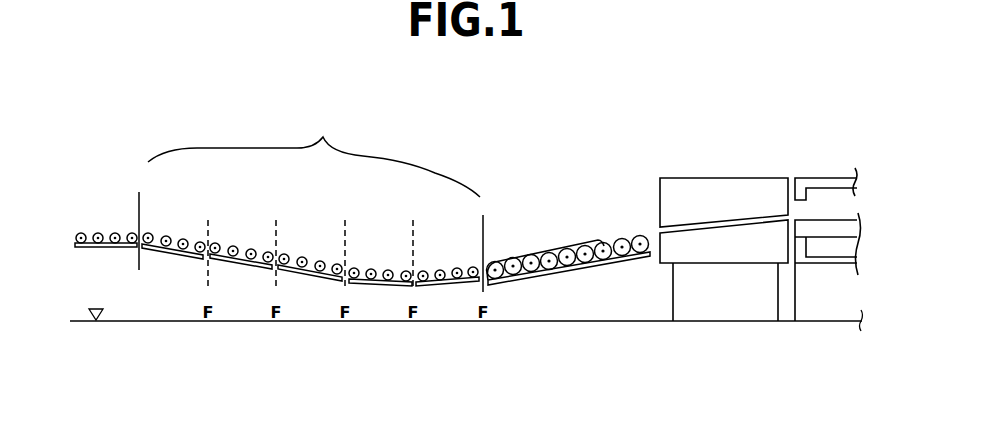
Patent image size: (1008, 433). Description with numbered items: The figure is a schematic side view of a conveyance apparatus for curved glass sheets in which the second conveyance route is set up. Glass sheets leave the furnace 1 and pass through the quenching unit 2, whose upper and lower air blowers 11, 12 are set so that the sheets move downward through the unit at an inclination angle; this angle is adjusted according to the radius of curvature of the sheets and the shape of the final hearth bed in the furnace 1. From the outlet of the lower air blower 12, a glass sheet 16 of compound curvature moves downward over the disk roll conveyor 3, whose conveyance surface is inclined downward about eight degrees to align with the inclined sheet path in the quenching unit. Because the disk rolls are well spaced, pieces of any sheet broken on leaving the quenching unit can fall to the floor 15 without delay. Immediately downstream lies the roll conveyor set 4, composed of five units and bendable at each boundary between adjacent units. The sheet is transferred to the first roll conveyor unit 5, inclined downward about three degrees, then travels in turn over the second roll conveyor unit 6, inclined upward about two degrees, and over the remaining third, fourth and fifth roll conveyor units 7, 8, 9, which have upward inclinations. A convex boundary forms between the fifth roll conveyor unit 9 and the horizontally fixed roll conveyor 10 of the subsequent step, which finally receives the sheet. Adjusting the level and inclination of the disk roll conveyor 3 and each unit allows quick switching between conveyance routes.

The furnace 1 is at (828, 165).
The quenching unit 2 is at (724, 249).
The disk roll conveyor 3 is at (569, 281).
The roll conveyor set 4 is at (314, 151).
The first roll conveyor unit 5 is at (452, 265).
The second roll conveyor unit 6 is at (384, 265).
The third roll conveyor unit 7 is at (316, 256).
The fourth roll conveyor unit 8 is at (245, 243).
The fifth roll conveyor unit 9 is at (178, 229).
The horizontally fixed roll conveyor 10 is at (108, 224).
The upper air blower 11 is at (765, 185).
The lower air blower 12 is at (740, 245).
The floor 15 is at (120, 321).
The glass sheet 16 is at (548, 240).